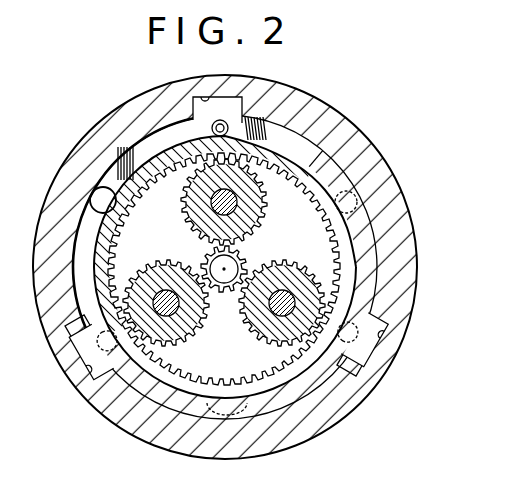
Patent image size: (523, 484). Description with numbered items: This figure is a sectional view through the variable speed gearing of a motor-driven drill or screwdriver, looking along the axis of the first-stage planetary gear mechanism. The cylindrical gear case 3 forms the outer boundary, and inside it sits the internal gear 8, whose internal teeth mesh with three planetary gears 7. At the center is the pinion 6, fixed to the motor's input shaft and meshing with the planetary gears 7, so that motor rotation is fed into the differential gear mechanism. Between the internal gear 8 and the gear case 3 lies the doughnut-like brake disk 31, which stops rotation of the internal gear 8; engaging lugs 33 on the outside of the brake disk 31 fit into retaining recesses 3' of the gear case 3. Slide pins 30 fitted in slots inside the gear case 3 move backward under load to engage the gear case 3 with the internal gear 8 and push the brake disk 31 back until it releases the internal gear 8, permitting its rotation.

The gear case 3 is at (225, 255).
The retaining recess 3' is at (228, 224).
The pinion 6 is at (243, 257).
The planetary gear 7 is at (262, 200).
The internal gear 8 is at (97, 240).
The slide pin 30 is at (214, 110).
The brake disk 31 is at (310, 385).
The engaging lug 33 is at (72, 347).